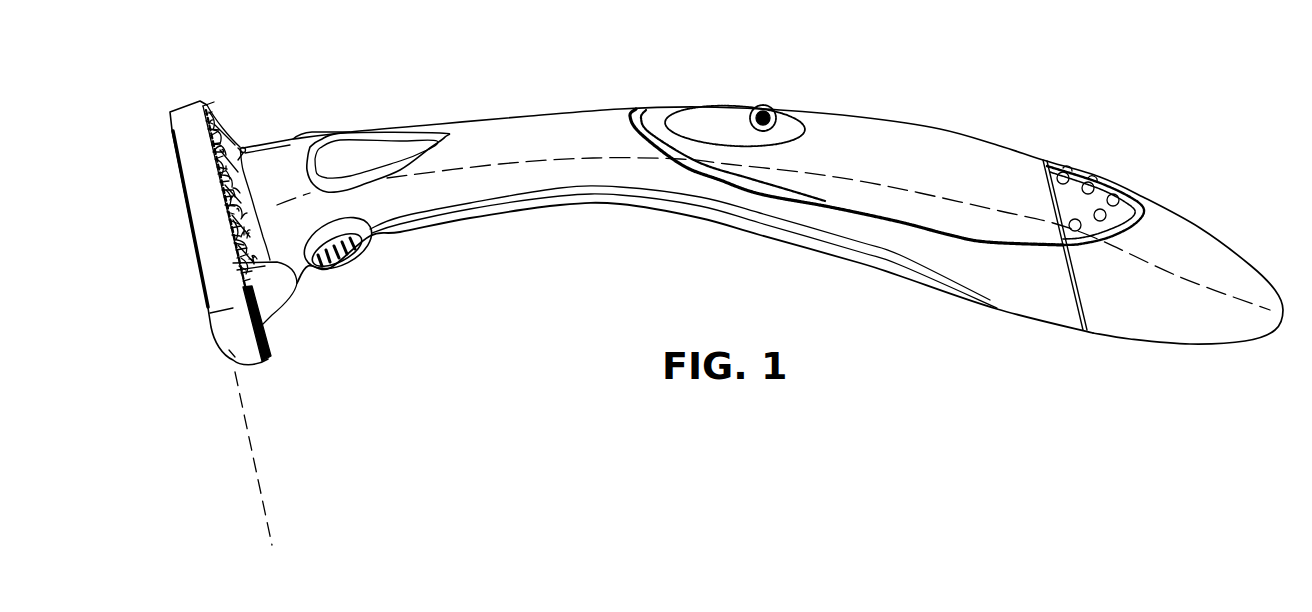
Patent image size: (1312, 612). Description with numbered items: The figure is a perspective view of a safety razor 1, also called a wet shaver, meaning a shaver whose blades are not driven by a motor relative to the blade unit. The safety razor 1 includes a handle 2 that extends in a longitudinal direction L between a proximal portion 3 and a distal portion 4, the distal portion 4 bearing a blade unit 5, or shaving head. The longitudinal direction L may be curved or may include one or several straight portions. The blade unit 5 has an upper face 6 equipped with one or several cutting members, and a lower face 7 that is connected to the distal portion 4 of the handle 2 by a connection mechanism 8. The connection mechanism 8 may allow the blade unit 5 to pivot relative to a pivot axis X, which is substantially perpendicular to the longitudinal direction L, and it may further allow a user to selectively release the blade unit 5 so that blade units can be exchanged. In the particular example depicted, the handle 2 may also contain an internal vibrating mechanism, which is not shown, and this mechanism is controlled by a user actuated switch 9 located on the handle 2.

The safety razor 1 is at (428, 350).
The handle 2 is at (568, 118).
The proximal portion 3 is at (1193, 238).
The distal portion 4 is at (303, 271).
The blade unit 5 is at (259, 377).
The upper face 6 is at (178, 230).
The lower face 7 is at (230, 118).
The connection mechanism 8 is at (238, 148).
The user actuated switch 9 is at (765, 106).
The longitudinal direction L is at (631, 158).
The pivot axis X is at (262, 497).